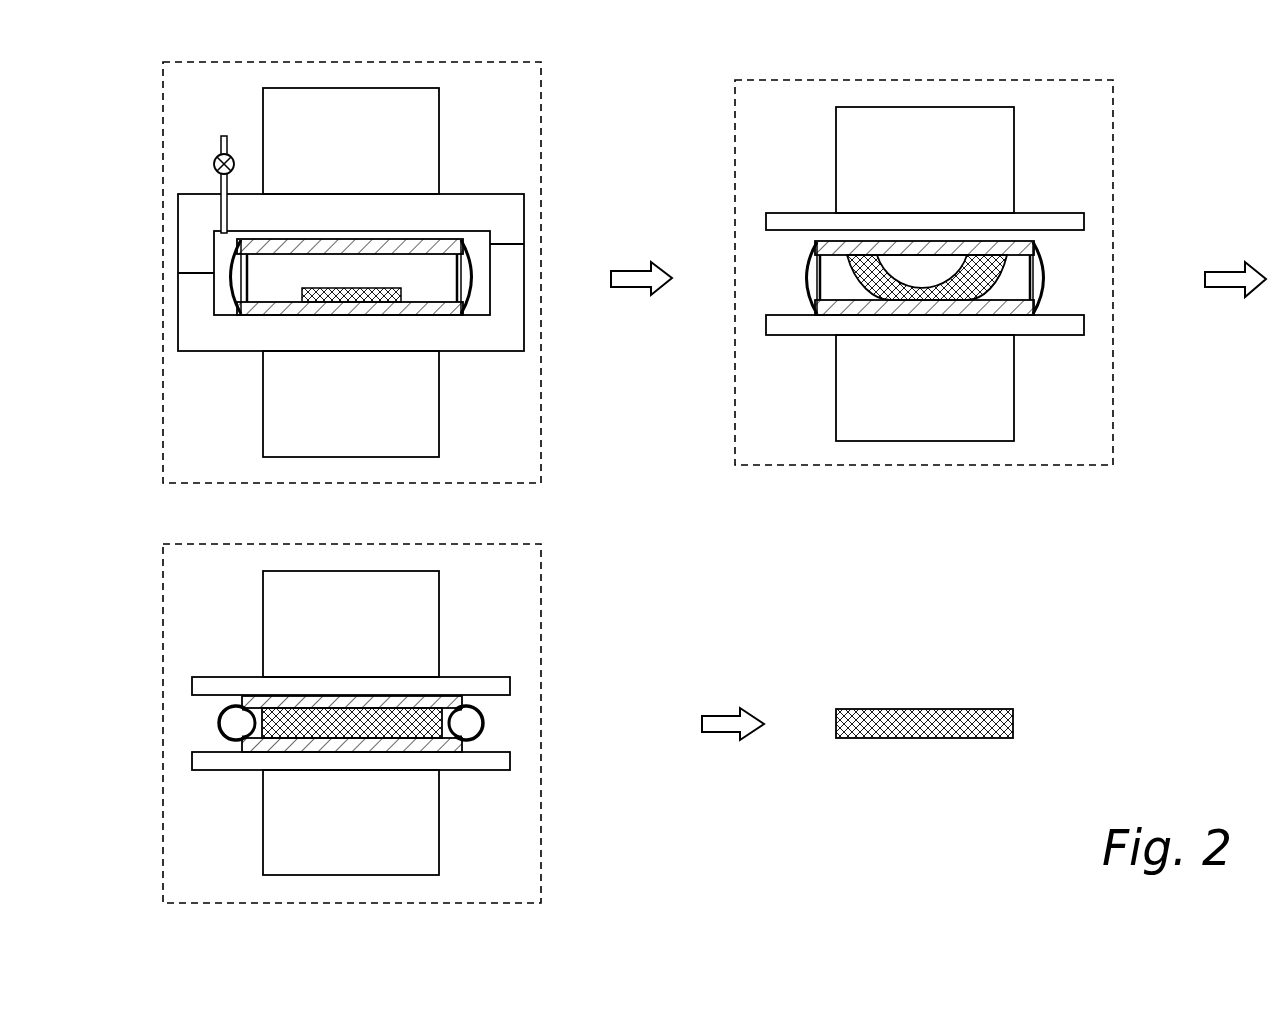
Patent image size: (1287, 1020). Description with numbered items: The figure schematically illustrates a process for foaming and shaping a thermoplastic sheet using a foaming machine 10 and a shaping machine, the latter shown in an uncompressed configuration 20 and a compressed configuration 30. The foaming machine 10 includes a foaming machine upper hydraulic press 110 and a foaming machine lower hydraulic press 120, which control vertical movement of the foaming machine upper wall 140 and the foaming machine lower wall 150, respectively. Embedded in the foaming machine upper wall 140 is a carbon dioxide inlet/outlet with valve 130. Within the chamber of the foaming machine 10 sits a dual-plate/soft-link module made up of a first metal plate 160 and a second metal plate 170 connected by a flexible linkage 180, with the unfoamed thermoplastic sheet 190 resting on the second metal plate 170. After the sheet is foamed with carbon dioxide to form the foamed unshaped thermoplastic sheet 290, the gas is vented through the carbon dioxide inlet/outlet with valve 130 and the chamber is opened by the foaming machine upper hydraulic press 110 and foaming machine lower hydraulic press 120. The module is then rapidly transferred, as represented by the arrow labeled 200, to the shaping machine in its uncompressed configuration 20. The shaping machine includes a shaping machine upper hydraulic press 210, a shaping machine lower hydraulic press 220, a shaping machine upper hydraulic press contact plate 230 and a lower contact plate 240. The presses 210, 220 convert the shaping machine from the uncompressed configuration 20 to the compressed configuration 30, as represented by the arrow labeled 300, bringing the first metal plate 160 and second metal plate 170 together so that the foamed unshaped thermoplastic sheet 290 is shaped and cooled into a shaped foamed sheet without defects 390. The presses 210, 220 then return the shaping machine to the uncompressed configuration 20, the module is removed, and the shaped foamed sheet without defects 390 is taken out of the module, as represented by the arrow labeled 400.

The foaming machine 10 is at (290, 58).
The foaming machine upper hydraulic press 110 is at (362, 122).
The foaming machine lower hydraulic press 120 is at (379, 442).
The carbon dioxide inlet/outlet with valve 130 is at (220, 148).
The foaming machine upper wall 140 is at (193, 243).
The foaming machine lower wall 150 is at (197, 298).
The first metal plate 160 is at (438, 246).
The second metal plate 170 is at (305, 308).
The flexible linkage 180 is at (470, 278).
The unfoamed thermoplastic sheet 190 is at (367, 283).
The arrow representing transfer of the dual-plate/soft-link module 200 is at (632, 277).
The uncompressed configuration of the shaping machine 20 is at (878, 78).
The shaping machine upper hydraulic press 210 is at (932, 153).
The shaping machine lower hydraulic press 220 is at (975, 398).
The shaping machine upper hydraulic press contact plate 230 is at (1060, 217).
The shaping machine lower hydraulic press contact plate 240 is at (1060, 328).
The foamed unshaped thermoplastic sheet 290 is at (912, 288).
The arrow representing conversion to compressed configuration 300 is at (1225, 275).
The compressed configuration of the shaping machine 30 is at (258, 542).
The shaped foamed sheet without defects 390 is at (350, 727).
The arrow representing removal of the shaped foamed sheet 400 is at (720, 722).